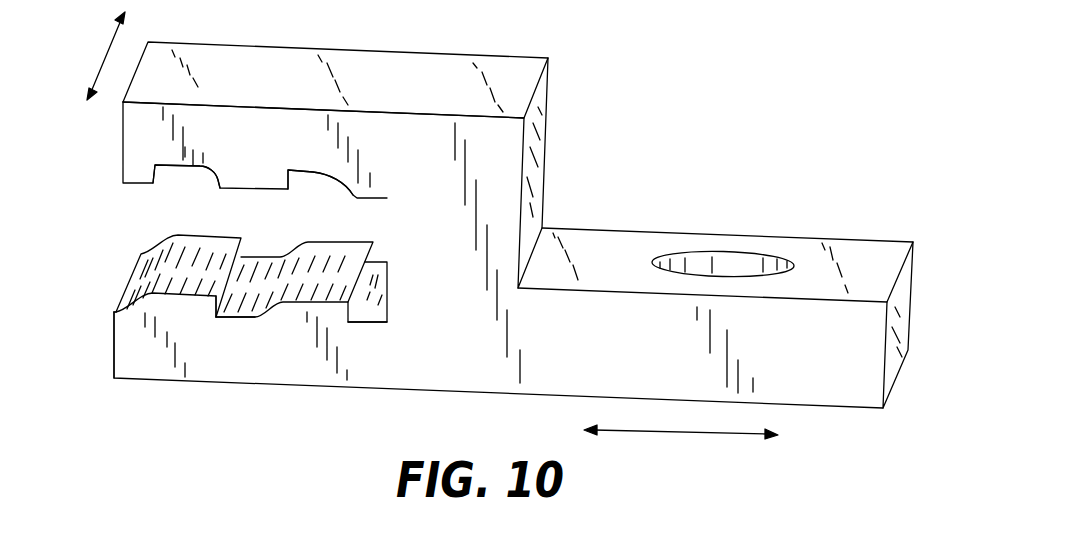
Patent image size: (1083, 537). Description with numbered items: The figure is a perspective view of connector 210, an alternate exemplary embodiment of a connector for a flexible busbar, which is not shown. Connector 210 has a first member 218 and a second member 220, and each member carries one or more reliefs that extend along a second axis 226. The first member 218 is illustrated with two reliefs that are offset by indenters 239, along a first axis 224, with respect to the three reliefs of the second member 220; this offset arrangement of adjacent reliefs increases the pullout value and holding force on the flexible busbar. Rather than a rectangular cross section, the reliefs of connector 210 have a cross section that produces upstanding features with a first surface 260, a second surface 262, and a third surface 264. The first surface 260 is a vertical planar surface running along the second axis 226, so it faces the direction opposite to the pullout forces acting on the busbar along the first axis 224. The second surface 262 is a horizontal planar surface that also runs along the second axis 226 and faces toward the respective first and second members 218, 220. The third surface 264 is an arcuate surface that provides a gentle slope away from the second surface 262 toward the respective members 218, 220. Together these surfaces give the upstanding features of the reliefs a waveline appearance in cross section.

The connector 210 is at (660, 50).
The first member 218 is at (137, 140).
The second member 220 is at (130, 357).
The first axis 224 is at (681, 445).
The second axis 226 is at (93, 56).
The indenters 239 is at (242, 192).
The first surface 260 is at (260, 258).
The second surface 262 is at (225, 247).
The third surface 264 is at (145, 270).